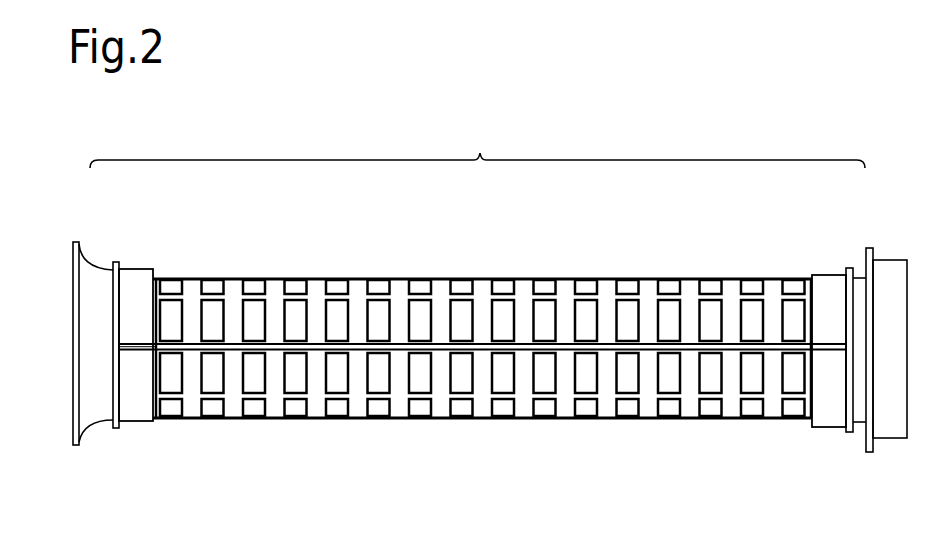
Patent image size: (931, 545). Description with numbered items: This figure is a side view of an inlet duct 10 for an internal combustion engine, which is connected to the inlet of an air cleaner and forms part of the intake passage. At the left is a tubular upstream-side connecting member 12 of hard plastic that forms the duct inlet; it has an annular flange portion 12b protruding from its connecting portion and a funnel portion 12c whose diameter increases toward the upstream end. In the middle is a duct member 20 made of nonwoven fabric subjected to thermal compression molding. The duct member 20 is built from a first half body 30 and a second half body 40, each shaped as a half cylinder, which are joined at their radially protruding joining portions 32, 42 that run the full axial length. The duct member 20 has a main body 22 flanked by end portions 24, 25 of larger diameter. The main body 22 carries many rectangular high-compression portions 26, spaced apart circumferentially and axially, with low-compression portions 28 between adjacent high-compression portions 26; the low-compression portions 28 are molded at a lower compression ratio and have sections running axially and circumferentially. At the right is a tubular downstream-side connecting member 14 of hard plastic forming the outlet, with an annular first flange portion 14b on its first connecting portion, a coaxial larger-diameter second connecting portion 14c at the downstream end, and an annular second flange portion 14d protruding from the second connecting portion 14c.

The inlet duct 10 is at (477, 147).
The upstream-side connecting member 12 is at (107, 343).
The flange portion 12b is at (115, 430).
The funnel portion 12c is at (74, 447).
The downstream-side connecting member 14 is at (872, 334).
The first flange portion 14b is at (850, 433).
The second connecting portion 14c is at (890, 260).
The second flange portion 14d is at (867, 247).
The duct member 20 is at (482, 342).
The main body 22 is at (402, 280).
The end portion 24 is at (138, 270).
The end portion 25 is at (835, 273).
The high-compression portion 26 is at (262, 315).
The low-compression portion 28 is at (358, 318).
The first half body 30 is at (607, 423).
The joining portion 32 is at (483, 341).
The second half body 40 is at (608, 277).
The joining portion 42 is at (138, 338).